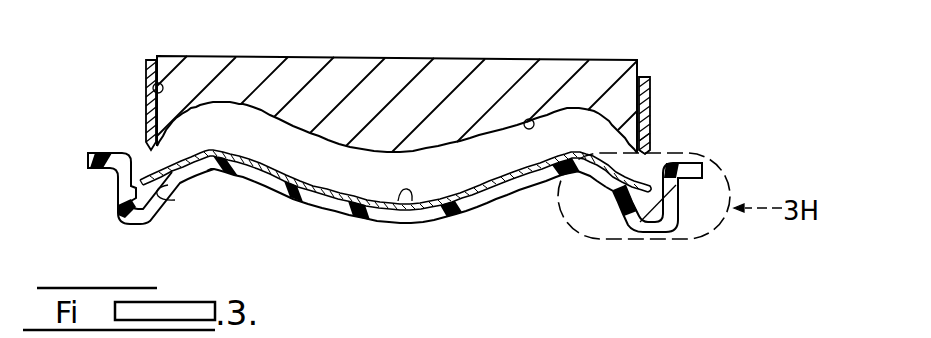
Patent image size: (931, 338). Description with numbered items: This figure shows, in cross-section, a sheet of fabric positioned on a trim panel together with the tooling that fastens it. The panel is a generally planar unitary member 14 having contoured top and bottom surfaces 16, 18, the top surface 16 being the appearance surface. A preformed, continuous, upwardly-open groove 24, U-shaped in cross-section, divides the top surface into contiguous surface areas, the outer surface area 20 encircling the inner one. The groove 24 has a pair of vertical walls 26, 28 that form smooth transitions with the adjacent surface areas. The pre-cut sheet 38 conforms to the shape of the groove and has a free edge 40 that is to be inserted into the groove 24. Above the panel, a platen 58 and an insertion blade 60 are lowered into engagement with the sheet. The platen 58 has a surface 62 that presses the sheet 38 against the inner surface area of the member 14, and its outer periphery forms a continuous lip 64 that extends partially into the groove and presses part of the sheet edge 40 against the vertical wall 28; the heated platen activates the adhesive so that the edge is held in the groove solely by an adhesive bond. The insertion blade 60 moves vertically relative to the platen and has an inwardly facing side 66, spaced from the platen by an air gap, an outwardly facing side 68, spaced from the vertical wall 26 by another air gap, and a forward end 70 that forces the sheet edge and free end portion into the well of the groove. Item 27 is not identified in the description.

The unitary member 14 is at (107, 219).
The top surface 16 is at (112, 147).
The bottom surface 18 is at (368, 202).
The surface area 20 is at (100, 153).
The groove 24 is at (650, 207).
The vertical wall 26 is at (136, 186).
The bead 27 is at (408, 203).
The vertical wall 28 is at (175, 200).
The sheet 38 is at (498, 180).
The free edge 40 is at (622, 183).
The platen 58 is at (518, 58).
The insertion blade 60 is at (660, 91).
The surface 62 is at (533, 119).
The lip 64 is at (633, 139).
The inwardly facing side 66 is at (153, 88).
The outwardly facing side 68 is at (146, 64).
The forward end 70 is at (650, 144).